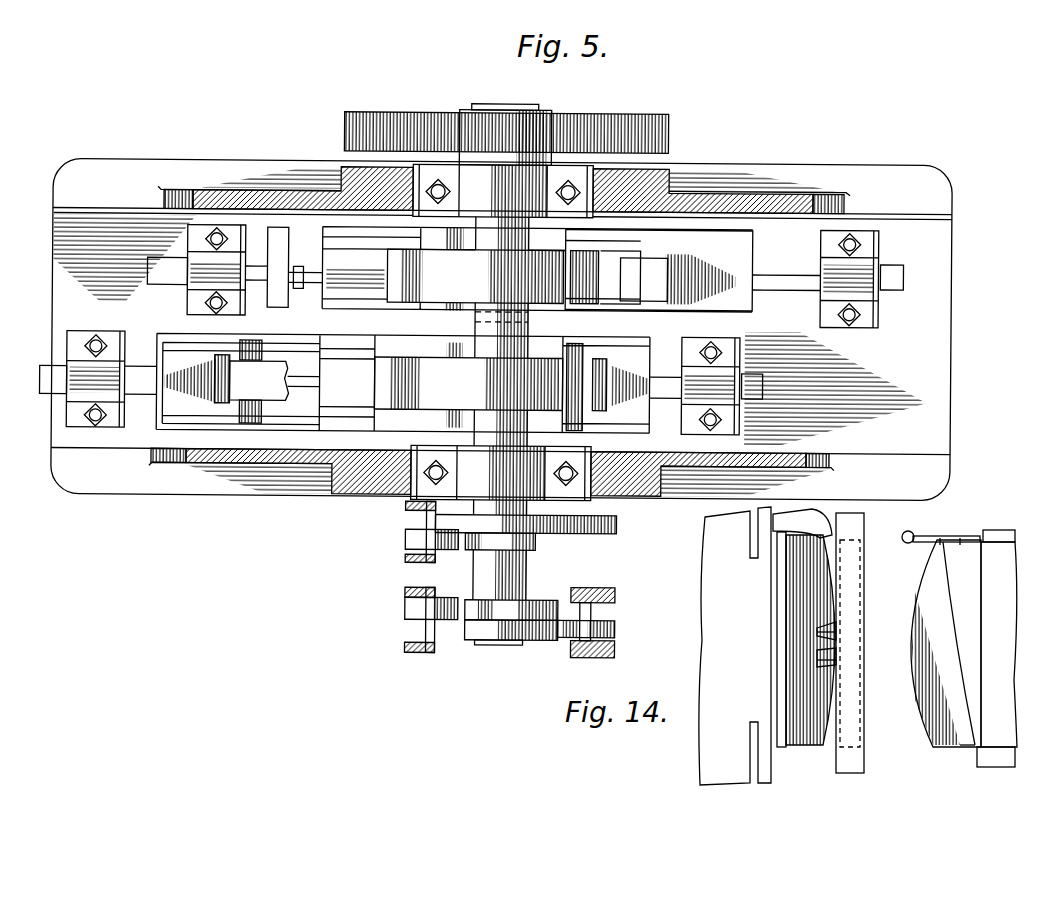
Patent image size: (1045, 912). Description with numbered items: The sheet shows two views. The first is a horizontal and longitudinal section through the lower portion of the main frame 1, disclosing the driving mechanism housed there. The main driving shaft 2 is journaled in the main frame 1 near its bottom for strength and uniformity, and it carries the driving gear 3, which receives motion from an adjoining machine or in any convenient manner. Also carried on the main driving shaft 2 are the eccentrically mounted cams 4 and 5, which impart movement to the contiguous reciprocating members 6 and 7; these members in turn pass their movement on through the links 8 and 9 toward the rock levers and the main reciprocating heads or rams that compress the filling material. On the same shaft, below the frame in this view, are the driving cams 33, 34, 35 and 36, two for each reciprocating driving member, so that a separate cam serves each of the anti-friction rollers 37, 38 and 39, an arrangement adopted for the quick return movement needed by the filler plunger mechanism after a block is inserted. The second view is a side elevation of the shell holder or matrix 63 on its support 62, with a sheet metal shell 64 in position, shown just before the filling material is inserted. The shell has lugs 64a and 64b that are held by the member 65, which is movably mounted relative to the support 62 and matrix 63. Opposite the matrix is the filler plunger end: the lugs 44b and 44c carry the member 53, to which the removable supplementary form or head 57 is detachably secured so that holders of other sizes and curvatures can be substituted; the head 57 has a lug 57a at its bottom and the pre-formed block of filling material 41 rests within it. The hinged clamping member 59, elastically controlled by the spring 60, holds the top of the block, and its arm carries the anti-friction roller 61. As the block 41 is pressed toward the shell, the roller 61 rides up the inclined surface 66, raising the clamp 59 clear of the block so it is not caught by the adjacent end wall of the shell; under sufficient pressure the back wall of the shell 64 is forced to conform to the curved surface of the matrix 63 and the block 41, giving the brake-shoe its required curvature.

In FIG. 5, the main frame 1 is at (260, 200).
In FIG. 5, the main driving shaft 2 is at (503, 237).
In FIG. 5, the driving gear 3 is at (387, 123).
In FIG. 5, the eccentrically mounted cam 4 is at (475, 276).
In FIG. 5, the eccentrically mounted cam 5 is at (468, 383).
In FIG. 5, the reciprocating member 6 is at (734, 271).
In FIG. 5, the reciprocating member 7 is at (391, 383).
In FIG. 5, the link 8 is at (643, 279).
In FIG. 5, the link 9 is at (241, 381).
In FIG. 5, the driving cam 33 is at (540, 633).
In FIG. 5, the driving cam 34 is at (540, 605).
In FIG. 5, the driving cam 35 is at (533, 545).
In FIG. 5, the driving cam 36 is at (480, 525).
In FIG. 5, the anti-friction roller 37 is at (573, 632).
In FIG. 5, the anti-friction roller 38 is at (420, 611).
In FIG. 5, the anti-friction roller 39 is at (417, 540).
In FIG. 14, the block of filling material 41 is at (930, 568).
In FIG. 14, the lug 44b is at (1000, 535).
In FIG. 14, the lug 44c is at (998, 762).
In FIG. 14, the member 53 is at (999, 644).
In FIG. 14, the supplementary form or head 57 is at (961, 643).
In FIG. 14, the lug 57a is at (972, 748).
In FIG. 14, the hinged clamping member 59 is at (945, 543).
In FIG. 14, the spring 60 is at (965, 540).
In FIG. 14, the anti-friction roller 61 is at (941, 525).
In FIG. 14, the support 62 is at (735, 646).
In FIG. 14, the shell holder or matrix 63 is at (806, 639).
In FIG. 14, the shell 64 is at (852, 645).
In FIG. 14, the lug 64a is at (818, 633).
In FIG. 14, the lug 64b is at (818, 650).
In FIG. 14, the member 65 is at (823, 628).
In FIG. 14, the inclined surface 66 is at (832, 522).